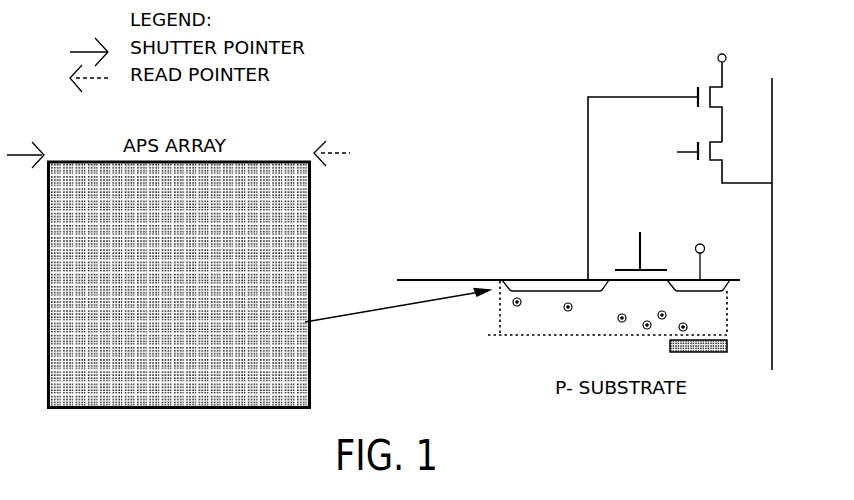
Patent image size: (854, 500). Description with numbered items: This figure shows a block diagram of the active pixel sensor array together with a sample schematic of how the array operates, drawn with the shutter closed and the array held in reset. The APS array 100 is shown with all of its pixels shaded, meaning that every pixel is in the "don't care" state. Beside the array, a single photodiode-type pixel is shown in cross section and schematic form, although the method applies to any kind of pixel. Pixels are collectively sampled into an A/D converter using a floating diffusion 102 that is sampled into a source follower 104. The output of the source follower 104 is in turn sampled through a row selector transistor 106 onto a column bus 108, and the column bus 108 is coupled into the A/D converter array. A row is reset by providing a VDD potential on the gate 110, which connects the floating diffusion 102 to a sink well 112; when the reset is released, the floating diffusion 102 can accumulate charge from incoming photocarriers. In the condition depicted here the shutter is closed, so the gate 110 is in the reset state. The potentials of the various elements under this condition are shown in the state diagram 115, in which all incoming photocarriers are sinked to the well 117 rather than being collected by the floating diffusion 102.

The APS array 100 is at (312, 188).
The floating diffusion 102 is at (529, 284).
The source follower 104 is at (720, 94).
The row selector transistor 106 is at (720, 155).
The column bus 108 is at (772, 232).
The gate 110 is at (639, 262).
The sink well 112 is at (728, 282).
The state diagram 115 is at (516, 349).
The well 117 is at (698, 353).